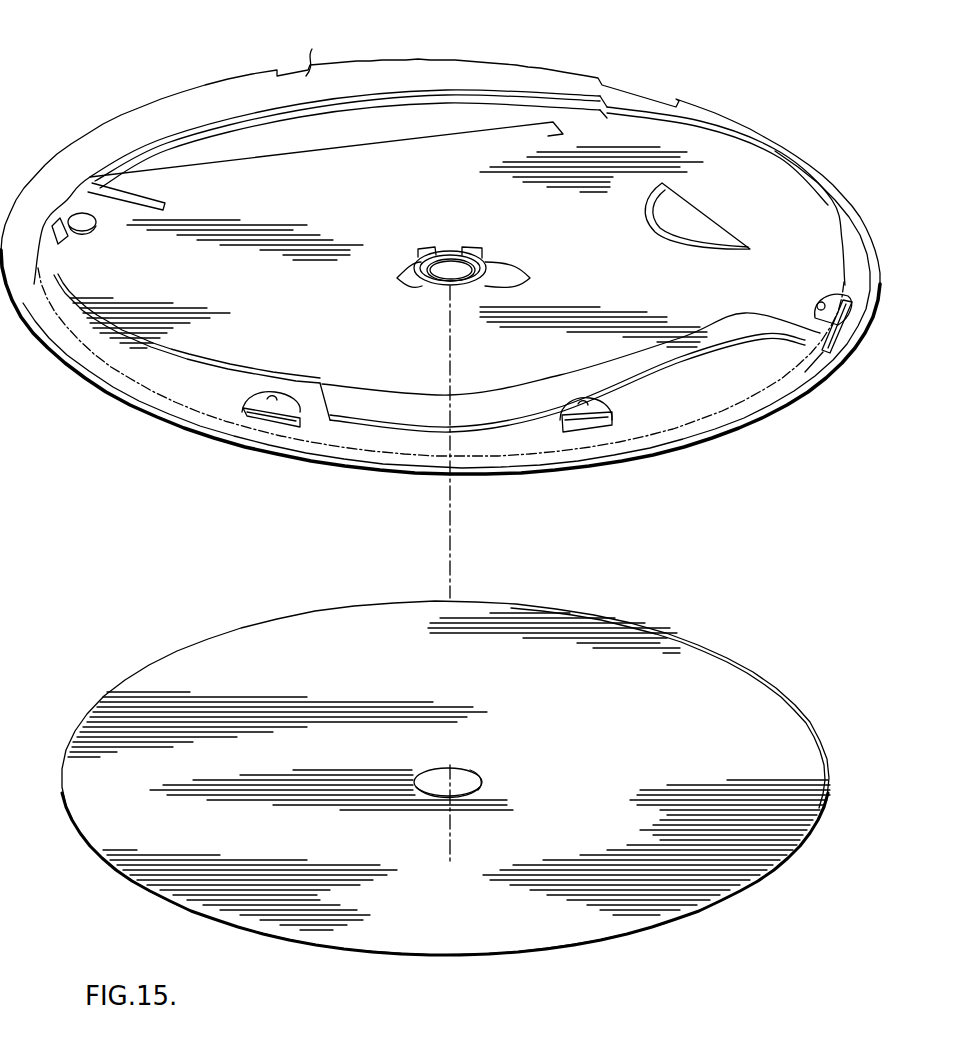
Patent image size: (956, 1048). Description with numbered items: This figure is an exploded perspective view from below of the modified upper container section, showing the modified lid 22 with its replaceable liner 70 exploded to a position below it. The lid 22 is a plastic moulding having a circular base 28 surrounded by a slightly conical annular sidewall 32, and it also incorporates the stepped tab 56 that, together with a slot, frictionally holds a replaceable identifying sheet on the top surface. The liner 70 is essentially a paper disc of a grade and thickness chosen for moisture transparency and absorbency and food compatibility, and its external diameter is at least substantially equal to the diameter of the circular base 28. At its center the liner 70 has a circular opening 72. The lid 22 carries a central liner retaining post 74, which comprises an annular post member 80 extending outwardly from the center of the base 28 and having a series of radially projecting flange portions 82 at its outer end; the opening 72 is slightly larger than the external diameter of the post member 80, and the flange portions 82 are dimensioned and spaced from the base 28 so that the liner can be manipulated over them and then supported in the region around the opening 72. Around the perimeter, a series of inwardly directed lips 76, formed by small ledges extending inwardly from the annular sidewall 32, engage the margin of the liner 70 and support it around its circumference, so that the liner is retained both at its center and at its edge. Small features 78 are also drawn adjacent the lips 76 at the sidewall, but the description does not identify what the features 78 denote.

The lid 22 is at (598, 64).
The circular base 28 is at (362, 227).
The annular sidewall 32 is at (143, 380).
The tab 56 is at (674, 250).
The liner 70 is at (620, 630).
The circular opening 72 is at (485, 788).
The central liner retaining post 74 is at (441, 291).
The lips 76 is at (257, 408).
The tab 78 is at (813, 310).
The annular post member 80 is at (453, 250).
The flange portions 82 is at (397, 278).